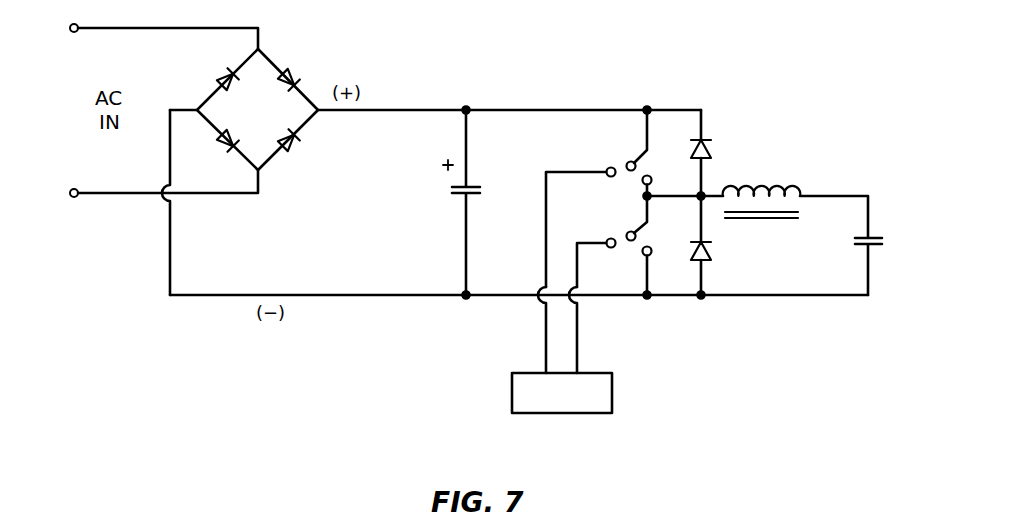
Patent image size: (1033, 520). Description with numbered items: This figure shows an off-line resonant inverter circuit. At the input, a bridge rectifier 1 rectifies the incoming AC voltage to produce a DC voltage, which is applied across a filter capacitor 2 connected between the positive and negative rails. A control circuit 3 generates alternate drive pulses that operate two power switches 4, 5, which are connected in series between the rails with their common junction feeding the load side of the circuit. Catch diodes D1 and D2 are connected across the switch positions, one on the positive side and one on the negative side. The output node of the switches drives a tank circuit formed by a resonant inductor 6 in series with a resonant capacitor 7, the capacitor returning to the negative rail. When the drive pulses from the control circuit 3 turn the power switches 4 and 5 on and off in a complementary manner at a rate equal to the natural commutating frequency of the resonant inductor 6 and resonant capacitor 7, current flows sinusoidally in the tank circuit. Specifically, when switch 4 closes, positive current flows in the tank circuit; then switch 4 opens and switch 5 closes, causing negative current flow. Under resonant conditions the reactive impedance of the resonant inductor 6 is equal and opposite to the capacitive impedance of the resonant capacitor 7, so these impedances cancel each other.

The bridge rectifier 1 is at (301, 58).
The filter capacitor 2 is at (460, 194).
The control circuit 3 is at (576, 414).
The power switch 4 is at (632, 160).
The power switch 5 is at (651, 247).
The resonant inductor 6 is at (777, 189).
The resonant capacitor 7 is at (878, 247).
The catch diode D1 is at (712, 149).
The catch diode D2 is at (712, 254).